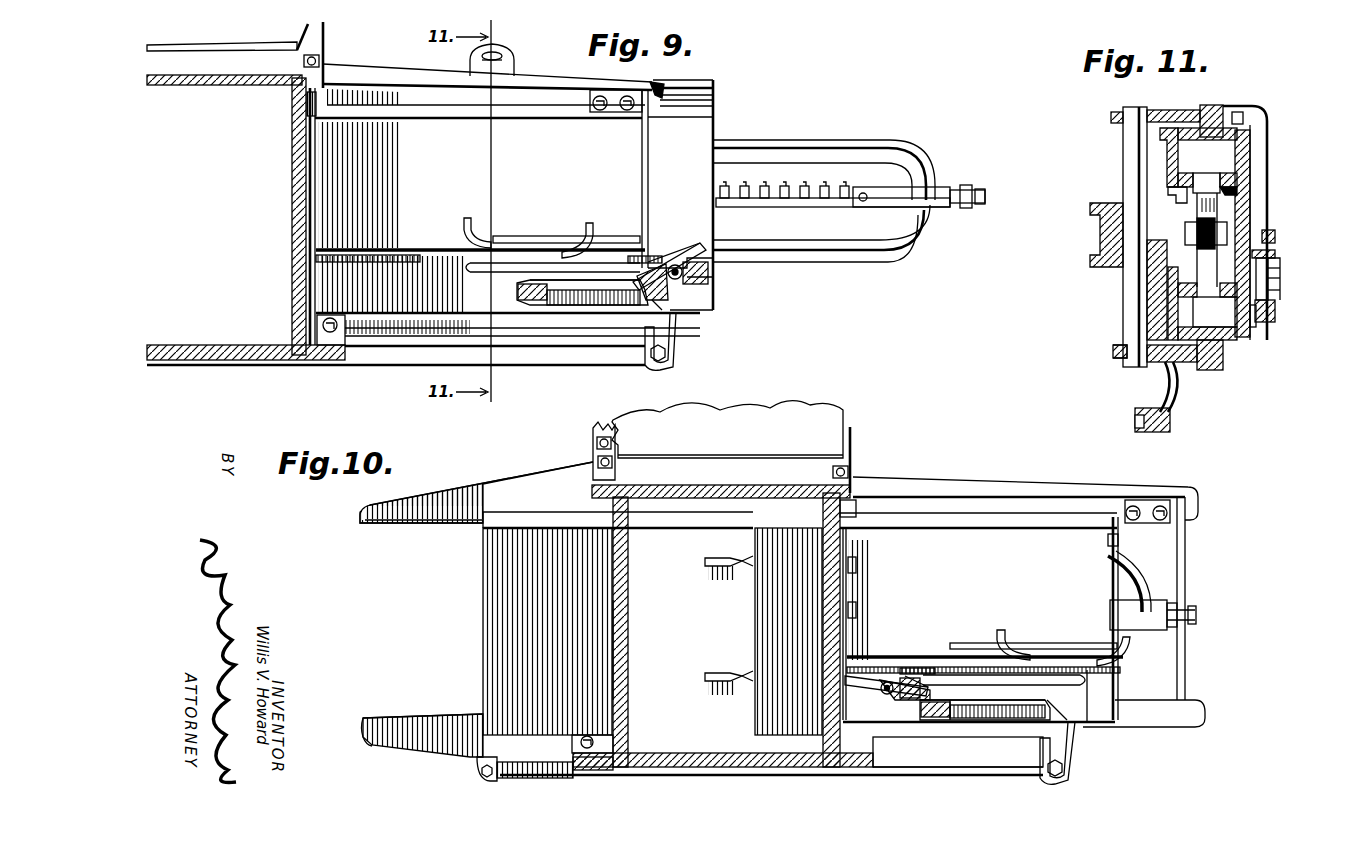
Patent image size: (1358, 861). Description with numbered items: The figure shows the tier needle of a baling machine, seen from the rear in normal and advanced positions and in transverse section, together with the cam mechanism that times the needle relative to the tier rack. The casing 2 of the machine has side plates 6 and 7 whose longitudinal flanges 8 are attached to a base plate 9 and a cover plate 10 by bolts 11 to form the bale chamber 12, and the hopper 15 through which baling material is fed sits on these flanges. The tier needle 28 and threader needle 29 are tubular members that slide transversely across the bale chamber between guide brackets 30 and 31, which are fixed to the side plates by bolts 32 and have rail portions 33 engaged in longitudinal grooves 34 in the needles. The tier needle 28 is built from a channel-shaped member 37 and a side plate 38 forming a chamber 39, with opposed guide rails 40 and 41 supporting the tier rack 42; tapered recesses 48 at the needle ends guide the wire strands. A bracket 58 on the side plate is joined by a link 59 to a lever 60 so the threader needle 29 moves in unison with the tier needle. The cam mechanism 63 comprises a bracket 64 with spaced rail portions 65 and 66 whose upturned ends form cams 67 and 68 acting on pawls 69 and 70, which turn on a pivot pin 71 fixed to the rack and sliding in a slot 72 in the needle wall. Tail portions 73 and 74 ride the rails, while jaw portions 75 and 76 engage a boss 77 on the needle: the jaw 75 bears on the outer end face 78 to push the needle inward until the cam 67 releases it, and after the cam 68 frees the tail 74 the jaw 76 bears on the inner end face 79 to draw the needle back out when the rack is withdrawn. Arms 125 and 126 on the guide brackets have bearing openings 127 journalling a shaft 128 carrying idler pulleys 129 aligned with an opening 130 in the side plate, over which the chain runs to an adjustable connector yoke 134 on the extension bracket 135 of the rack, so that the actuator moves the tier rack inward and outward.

In FIG. 9, the casing portion 2 is at (292, 290).
In FIG. 10, the casing portion 2 is at (628, 562).
In FIG. 9, the side plate 6 is at (292, 214).
In FIG. 10, the side plate 6 is at (823, 584).
In FIG. 10, the side plate 7 is at (628, 649).
In FIG. 9, the longitudinal flanges 8 is at (308, 342).
In FIG. 10, the longitudinal flanges 8 is at (603, 762).
In FIG. 9, the base plate 9 is at (210, 352).
In FIG. 10, the base plate 9 is at (698, 767).
In FIG. 9, the cover plate 10 is at (276, 85).
In FIG. 10, the cover plate 10 is at (672, 490).
In FIG. 9, the bolts 11 is at (326, 56).
In FIG. 10, the bolts 11 is at (855, 450).
In FIG. 9, the bale chamber 12 is at (253, 335).
In FIG. 10, the bale chamber 12 is at (800, 770).
In FIG. 9, the hopper 15 is at (284, 42).
In FIG. 10, the hopper 15 is at (824, 430).
In FIG. 9, the tier needle 28 is at (716, 85).
In FIG. 10, the tier needle 28 is at (1119, 545).
In FIG. 10, the threader needle 29 is at (483, 650).
In FIG. 9, the guide bracket 30 is at (582, 79).
In FIG. 11, the guide bracket 30 is at (1216, 105).
In FIG. 10, the guide bracket 30 is at (1060, 481).
In FIG. 9, the guide bracket 31 is at (460, 331).
In FIG. 11, the guide bracket 31 is at (1225, 364).
In FIG. 10, the guide bracket 31 is at (1106, 729).
In FIG. 9, the bolts 32 is at (296, 112).
In FIG. 10, the bolts 32 is at (858, 498).
In FIG. 9, the rail portions 33 is at (716, 93).
In FIG. 11, the rail portions 33 is at (1245, 115).
In FIG. 10, the rail portions 33 is at (1115, 502).
In FIG. 9, the longitudinal grooves 34 is at (690, 104).
In FIG. 11, the longitudinal grooves 34 is at (1240, 133).
In FIG. 10, the longitudinal grooves 34 is at (1109, 538).
In FIG. 9, the channel-shaped member 37 is at (716, 112).
In FIG. 11, the channel-shaped member 37 is at (1252, 206).
In FIG. 10, the channel-shaped member 37 is at (1103, 562).
In FIG. 9, the side plate 38 is at (678, 79).
In FIG. 11, the side plate 38 is at (1195, 365).
In FIG. 11, the chamber 39 is at (1226, 322).
In FIG. 11, the guide rail 40 is at (1240, 194).
In FIG. 11, the guide rail 41 is at (1168, 192).
In FIG. 9, the tier rack 42 is at (781, 271).
In FIG. 11, the tier rack 42 is at (1239, 180).
In FIG. 10, the recesses 48 is at (744, 580).
In FIG. 9, the bracket 58 is at (667, 343).
In FIG. 11, the bracket 58 is at (1173, 416).
In FIG. 10, the bracket 58 is at (1066, 754).
In FIG. 9, the link 59 is at (389, 360).
In FIG. 11, the link 59 is at (1140, 417).
In FIG. 10, the link 59 is at (1015, 773).
In FIG. 10, the lever 60 is at (482, 760).
In FIG. 9, the cam mechanism 63 is at (660, 238).
In FIG. 10, the cam mechanism 63 is at (917, 653).
In FIG. 9, the bracket 64 is at (322, 246).
In FIG. 10, the bracket 64 is at (848, 606).
In FIG. 9, the rail portion 65 is at (410, 252).
In FIG. 11, the rail portion 65 is at (1277, 254).
In FIG. 10, the rail portion 65 is at (951, 660).
In FIG. 9, the rail portion 66 is at (628, 240).
In FIG. 10, the rail portion 66 is at (1112, 650).
In FIG. 9, the cam portion 67 is at (578, 236).
In FIG. 11, the cam portion 67 is at (1276, 238).
In FIG. 10, the cam portion 67 is at (1082, 652).
In FIG. 9, the cam portion 68 is at (484, 233).
In FIG. 10, the cam portion 68 is at (1010, 641).
In FIG. 9, the pawl 69 is at (662, 298).
In FIG. 11, the pawl 69 is at (1280, 262).
In FIG. 10, the pawl 69 is at (885, 706).
In FIG. 9, the pawl 70 is at (683, 279).
In FIG. 11, the pawl 70 is at (1282, 290).
In FIG. 10, the pawl 70 is at (862, 655).
In FIG. 9, the pivot pin 71 is at (694, 288).
In FIG. 11, the pivot pin 71 is at (1282, 274).
In FIG. 10, the pivot pin 71 is at (923, 660).
In FIG. 9, the slot 72 is at (479, 276).
In FIG. 10, the slot 72 is at (1070, 684).
In FIG. 9, the tail portion 73 is at (702, 244).
In FIG. 11, the tail portion 73 is at (1282, 258).
In FIG. 10, the tail portion 73 is at (931, 671).
In FIG. 9, the tail portion 74 is at (662, 258).
In FIG. 11, the tail portion 74 is at (1282, 269).
In FIG. 10, the tail portion 74 is at (860, 668).
In FIG. 9, the jaw portion 75 is at (625, 308).
In FIG. 10, the jaw portion 75 is at (920, 702).
In FIG. 9, the jaw portion 76 is at (716, 276).
In FIG. 10, the jaw portion 76 is at (951, 722).
In FIG. 9, the boss 77 is at (603, 308).
In FIG. 11, the boss 77 is at (1278, 318).
In FIG. 10, the boss 77 is at (975, 722).
In FIG. 9, the outer end face 78 is at (657, 303).
In FIG. 10, the outer end face 78 is at (1067, 721).
In FIG. 9, the inner end face 79 is at (511, 312).
In FIG. 11, the inner end face 79 is at (1262, 325).
In FIG. 10, the inner end face 79 is at (913, 712).
In FIG. 11, the arm 125 is at (1156, 110).
In FIG. 11, the arm 126 is at (1112, 352).
In FIG. 11, the bearing openings 127 is at (1110, 114).
In FIG. 11, the shaft 128 is at (1122, 151).
In FIG. 11, the idler pulleys 129 is at (1095, 270).
In FIG. 11, the opening 130 is at (1150, 276).
In FIG. 9, the connector yoke 134 is at (947, 188).
In FIG. 9, the extension bracket 135 is at (782, 146).